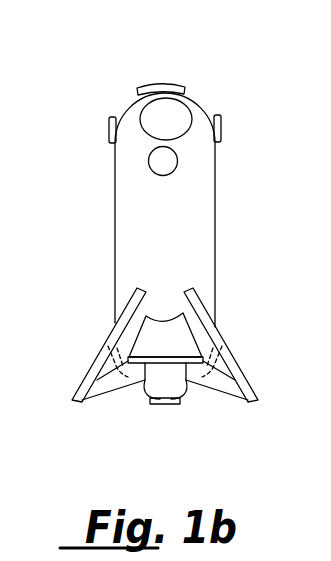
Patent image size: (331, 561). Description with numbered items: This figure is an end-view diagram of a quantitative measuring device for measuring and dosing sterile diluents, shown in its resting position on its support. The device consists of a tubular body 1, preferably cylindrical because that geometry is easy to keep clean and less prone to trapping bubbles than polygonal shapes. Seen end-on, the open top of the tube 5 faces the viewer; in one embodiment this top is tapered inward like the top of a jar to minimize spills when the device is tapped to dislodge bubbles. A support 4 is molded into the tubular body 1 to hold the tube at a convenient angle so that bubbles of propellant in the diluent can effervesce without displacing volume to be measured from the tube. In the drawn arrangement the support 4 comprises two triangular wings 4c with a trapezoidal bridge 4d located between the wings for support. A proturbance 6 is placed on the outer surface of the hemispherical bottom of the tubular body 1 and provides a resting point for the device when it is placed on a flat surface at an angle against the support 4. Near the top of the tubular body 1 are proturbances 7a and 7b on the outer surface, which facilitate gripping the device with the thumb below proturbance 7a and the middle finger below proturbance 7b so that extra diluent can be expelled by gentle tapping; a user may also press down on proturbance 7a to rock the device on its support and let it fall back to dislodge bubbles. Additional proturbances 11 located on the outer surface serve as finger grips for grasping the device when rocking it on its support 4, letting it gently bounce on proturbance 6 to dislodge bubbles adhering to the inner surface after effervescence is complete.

The tubular body 1 is at (113, 234).
The support 4 is at (88, 365).
The triangular wings 4c is at (225, 382).
The trapezoidal bridge 4d is at (177, 338).
The top of the tube 5 is at (153, 117).
The proturbance 6 is at (163, 405).
The proturbance 7a is at (158, 87).
The proturbance 7b is at (168, 163).
The additional proturbances 11 is at (108, 128).